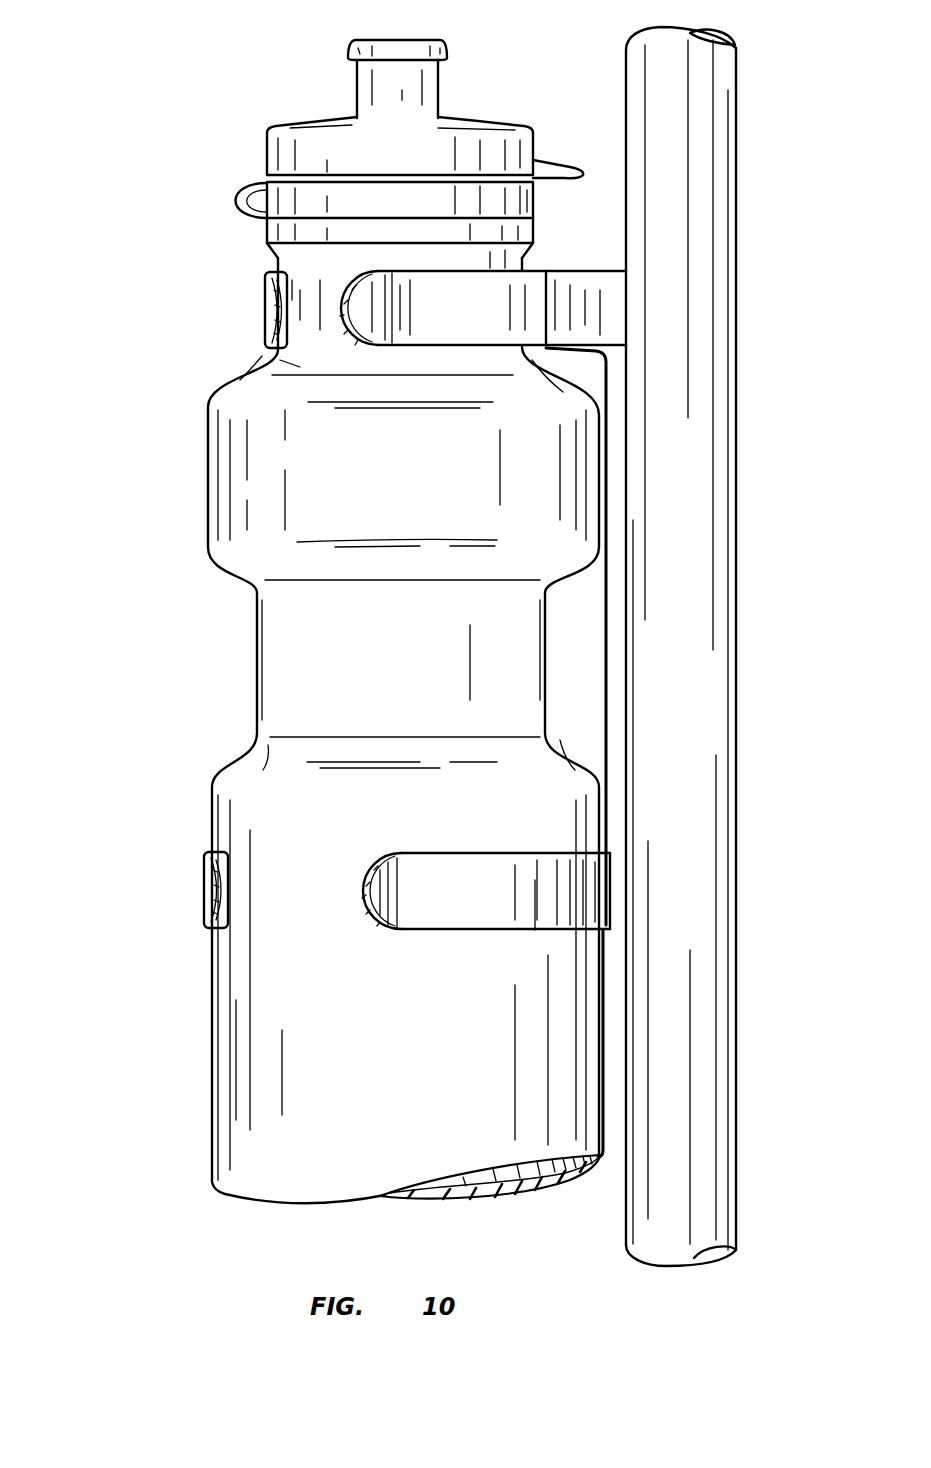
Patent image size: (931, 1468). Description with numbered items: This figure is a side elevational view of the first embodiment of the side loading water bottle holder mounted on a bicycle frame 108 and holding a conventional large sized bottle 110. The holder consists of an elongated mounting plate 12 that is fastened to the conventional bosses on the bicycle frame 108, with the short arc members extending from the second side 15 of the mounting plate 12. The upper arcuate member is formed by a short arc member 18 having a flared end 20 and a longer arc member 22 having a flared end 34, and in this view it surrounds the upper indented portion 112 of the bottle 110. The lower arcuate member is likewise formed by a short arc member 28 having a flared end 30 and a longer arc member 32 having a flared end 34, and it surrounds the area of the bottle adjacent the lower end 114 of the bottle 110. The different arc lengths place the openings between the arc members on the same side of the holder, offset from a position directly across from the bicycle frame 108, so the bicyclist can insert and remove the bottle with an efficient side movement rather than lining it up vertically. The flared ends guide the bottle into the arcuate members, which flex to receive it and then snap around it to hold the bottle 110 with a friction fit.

The mounting plate 12 is at (606, 632).
The second side 15 is at (618, 592).
The short arc member 18 is at (427, 337).
The flared end 20 is at (347, 330).
The longer arc member 22 is at (268, 318).
The short arc member 28 is at (420, 918).
The flared end 30 is at (363, 890).
The longer arc member 32 is at (203, 882).
The flared end 34 is at (218, 878).
The bicycle frame 108 is at (725, 440).
The large sized bottle 110 is at (297, 648).
The upper indented portion 112 is at (296, 270).
The lower end 114 is at (210, 982).